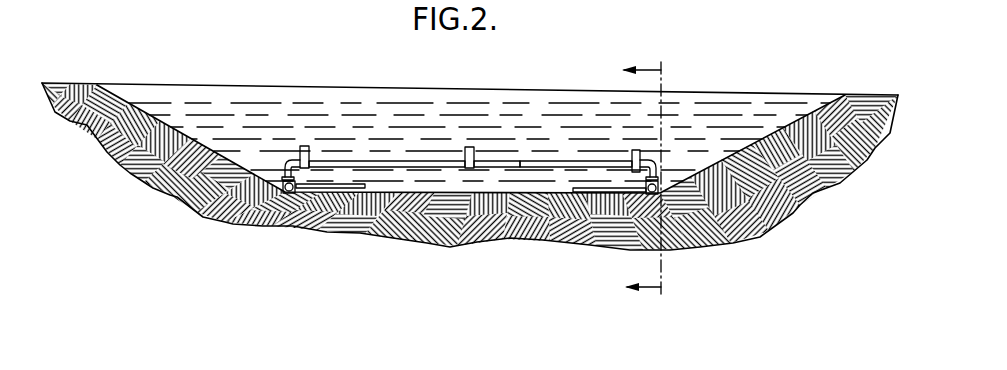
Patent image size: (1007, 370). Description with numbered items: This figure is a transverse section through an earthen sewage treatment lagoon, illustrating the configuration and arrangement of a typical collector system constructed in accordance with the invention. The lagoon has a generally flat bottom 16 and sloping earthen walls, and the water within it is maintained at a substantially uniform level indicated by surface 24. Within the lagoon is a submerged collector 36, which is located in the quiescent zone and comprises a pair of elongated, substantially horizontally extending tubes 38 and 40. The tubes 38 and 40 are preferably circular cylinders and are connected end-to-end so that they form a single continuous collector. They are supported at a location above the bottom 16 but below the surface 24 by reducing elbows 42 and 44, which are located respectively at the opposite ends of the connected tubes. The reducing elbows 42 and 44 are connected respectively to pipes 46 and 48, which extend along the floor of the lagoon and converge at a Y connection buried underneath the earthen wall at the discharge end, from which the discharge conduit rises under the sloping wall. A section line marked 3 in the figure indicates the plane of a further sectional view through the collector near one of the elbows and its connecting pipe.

The bottom 16 is at (263, 183).
The surface 24 is at (424, 108).
The submerged collector 36 is at (500, 158).
The tube 38 is at (367, 158).
The tube 40 is at (557, 158).
The reducing elbow 42 is at (293, 150).
The reducing elbow 44 is at (656, 163).
The pipe 46 is at (352, 190).
The pipe 48 is at (612, 188).
The section line 3- 3 is at (655, 184).